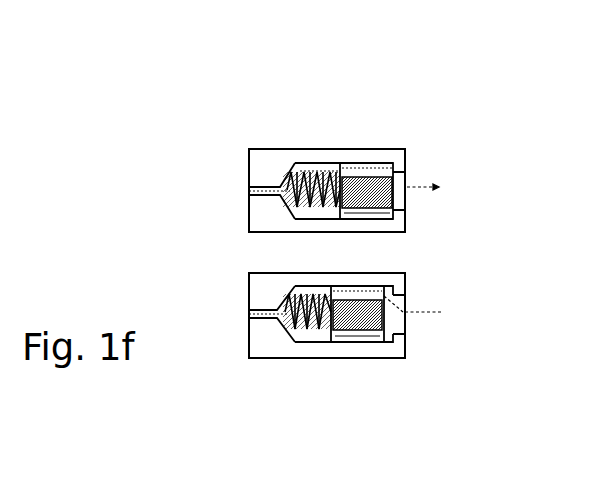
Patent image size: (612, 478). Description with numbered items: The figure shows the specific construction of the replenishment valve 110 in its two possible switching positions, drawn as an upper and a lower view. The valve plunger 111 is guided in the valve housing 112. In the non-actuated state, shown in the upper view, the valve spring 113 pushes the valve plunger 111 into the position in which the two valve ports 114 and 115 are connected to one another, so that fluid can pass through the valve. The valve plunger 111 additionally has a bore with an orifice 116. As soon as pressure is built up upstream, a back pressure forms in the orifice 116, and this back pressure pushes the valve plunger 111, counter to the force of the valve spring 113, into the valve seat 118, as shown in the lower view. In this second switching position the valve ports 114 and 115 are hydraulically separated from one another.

The replenishment valve 110 is at (340, 72).
The valve plunger 111 is at (393, 213).
The valve housing 112 is at (252, 148).
The valve spring 113 is at (307, 172).
The valve port 114 is at (240, 190).
The valve port 115 is at (405, 172).
The orifice 116 is at (363, 163).
The valve seat 118 is at (270, 312).